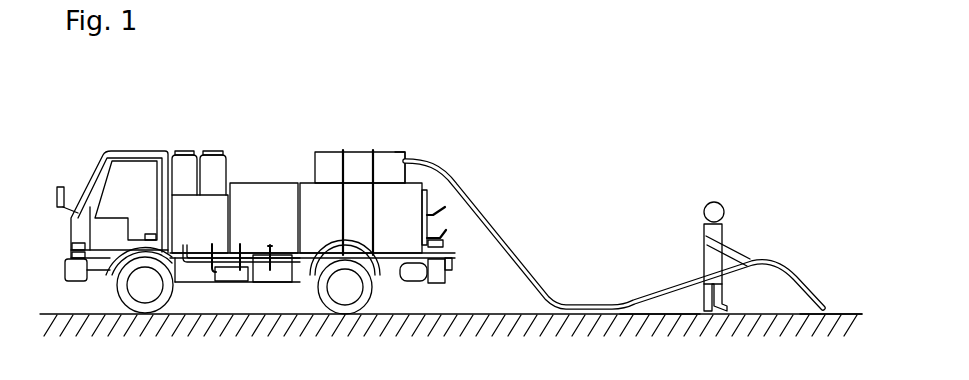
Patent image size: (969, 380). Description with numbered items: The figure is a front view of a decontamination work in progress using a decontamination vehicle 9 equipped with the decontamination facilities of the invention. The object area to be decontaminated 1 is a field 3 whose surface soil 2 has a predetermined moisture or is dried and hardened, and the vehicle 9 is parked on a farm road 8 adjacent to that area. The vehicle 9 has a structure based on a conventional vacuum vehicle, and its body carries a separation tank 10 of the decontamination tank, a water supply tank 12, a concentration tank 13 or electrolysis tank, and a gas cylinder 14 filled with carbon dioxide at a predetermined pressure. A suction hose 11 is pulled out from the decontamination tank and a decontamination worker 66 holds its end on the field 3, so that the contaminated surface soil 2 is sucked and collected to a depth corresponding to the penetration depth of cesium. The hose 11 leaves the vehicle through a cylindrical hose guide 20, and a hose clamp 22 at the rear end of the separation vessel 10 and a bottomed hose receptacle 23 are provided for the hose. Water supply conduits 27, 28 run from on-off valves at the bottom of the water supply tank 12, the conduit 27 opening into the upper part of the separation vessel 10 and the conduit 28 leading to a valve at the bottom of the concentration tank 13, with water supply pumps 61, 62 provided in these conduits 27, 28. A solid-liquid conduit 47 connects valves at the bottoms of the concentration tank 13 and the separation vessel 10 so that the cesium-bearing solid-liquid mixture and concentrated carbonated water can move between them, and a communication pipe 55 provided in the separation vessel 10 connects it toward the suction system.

The object area to be decontaminated 1 is at (803, 216).
The surface soil 2 is at (842, 322).
The field 3 is at (658, 310).
The farm road 8 is at (43, 317).
The decontamination vehicle 9 is at (104, 132).
The separation tank 10 is at (323, 203).
The suction hose 11 is at (510, 254).
The water supply tank 12 is at (268, 190).
The concentration tank 13 is at (212, 205).
The gas cylinder 14 is at (212, 150).
The cylindrical hose guide 20 is at (395, 162).
The hose clamp 22 is at (447, 237).
The bottomed hose receptacle 23 is at (437, 282).
The water supply conduit 27 is at (347, 163).
The water supply conduit 28 is at (213, 243).
The solid-liquid conduit 47 is at (188, 247).
The communication pipe 55 is at (377, 163).
The water supply pump 61 is at (227, 275).
The water supply pump 62 is at (282, 277).
The decontamination worker 66 is at (700, 233).